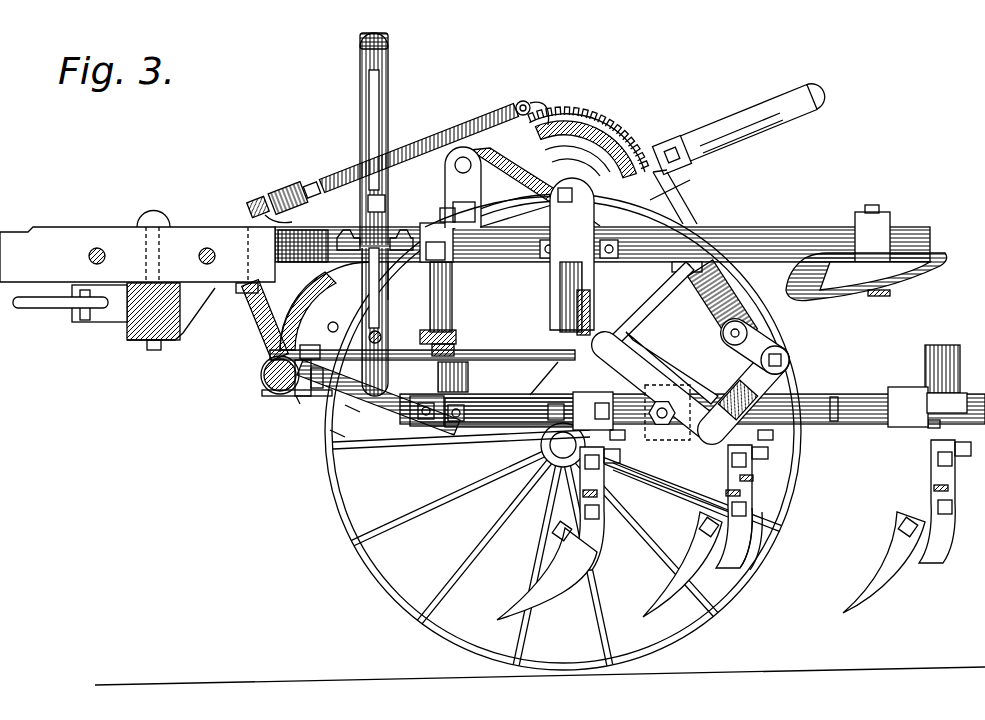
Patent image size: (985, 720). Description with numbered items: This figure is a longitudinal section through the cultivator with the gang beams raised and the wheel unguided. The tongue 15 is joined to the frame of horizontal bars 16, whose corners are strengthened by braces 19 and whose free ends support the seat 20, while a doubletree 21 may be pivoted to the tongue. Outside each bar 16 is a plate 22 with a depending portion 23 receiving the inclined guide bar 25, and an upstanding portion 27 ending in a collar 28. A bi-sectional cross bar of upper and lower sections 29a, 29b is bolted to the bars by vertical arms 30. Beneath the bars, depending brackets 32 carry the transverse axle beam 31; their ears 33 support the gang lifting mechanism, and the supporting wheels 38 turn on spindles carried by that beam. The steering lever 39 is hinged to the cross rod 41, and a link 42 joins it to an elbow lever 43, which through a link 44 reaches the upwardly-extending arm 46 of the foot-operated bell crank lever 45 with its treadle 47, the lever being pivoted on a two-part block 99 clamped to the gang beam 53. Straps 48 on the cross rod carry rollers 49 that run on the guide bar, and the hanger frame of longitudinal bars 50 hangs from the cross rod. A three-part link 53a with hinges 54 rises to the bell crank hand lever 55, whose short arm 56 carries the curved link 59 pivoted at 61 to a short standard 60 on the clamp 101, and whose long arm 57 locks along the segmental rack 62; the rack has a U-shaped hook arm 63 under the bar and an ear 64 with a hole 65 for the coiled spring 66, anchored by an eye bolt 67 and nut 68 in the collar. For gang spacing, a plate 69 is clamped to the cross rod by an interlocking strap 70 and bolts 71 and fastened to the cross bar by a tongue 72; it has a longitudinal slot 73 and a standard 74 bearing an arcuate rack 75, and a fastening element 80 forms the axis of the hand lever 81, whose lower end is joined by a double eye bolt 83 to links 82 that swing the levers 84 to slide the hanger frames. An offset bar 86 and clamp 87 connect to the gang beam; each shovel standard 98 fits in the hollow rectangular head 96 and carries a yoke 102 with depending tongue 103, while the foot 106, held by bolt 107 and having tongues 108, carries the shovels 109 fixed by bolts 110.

The tongue 15 is at (137, 243).
The horizontal bars 16 is at (805, 232).
The braces 19 is at (296, 236).
The seat 20 is at (915, 285).
The doubletree 21 is at (128, 330).
The plate 22 is at (310, 296).
The depending portions 23 is at (292, 316).
The guide bar 25 is at (262, 335).
The upstanding portion 27 is at (262, 218).
The collar 28 is at (310, 186).
The upper section 29a is at (458, 336).
The lower section 29b is at (525, 356).
The arms 30 is at (453, 300).
The transverse beam 31 is at (596, 320).
The depending brackets 32 is at (592, 300).
The ear 33 is at (520, 205).
The supporting wheels 38 is at (365, 572).
The lever 39 is at (495, 398).
The cross rod 41 is at (270, 392).
The link 42 is at (340, 330).
The elbow lever 43 is at (308, 346).
The link 44 is at (535, 378).
The foot-operated bell crank lever 45 is at (700, 445).
The upwardly-extending arm 46 is at (630, 358).
The treadle 47 is at (790, 360).
The straps 48 is at (262, 372).
The rollers 49 is at (250, 295).
The longitudinal bars 50 is at (405, 418).
The gang beam 53 is at (875, 424).
The three-part link 53a is at (440, 214).
The hinges 54 is at (450, 190).
The bell crank hand lever 55 is at (695, 183).
The short arm 56 is at (505, 170).
The long arm 57 is at (745, 112).
The curved link 59 is at (700, 212).
The short standard 60 is at (722, 343).
The pivot 61 is at (765, 330).
The segmental rack 62 is at (632, 118).
The U-shaped hook arm 63 is at (665, 288).
The ear 64 is at (518, 103).
The hole 65 is at (545, 106).
The coiled spring 66 is at (425, 140).
The eye bolt 67 is at (252, 203).
The nut 68 is at (285, 190).
The plate 69 is at (315, 390).
The interlocking strap 70 is at (298, 392).
The bolts 71 is at (296, 400).
The tongue 72 is at (432, 348).
The longitudinal slot 73 is at (440, 376).
The standard 74 is at (375, 252).
The arcuate rack 75 is at (368, 200).
The fastening element 80 is at (375, 322).
The hand lever 81 is at (390, 298).
The links 82 is at (350, 419).
The double eye bolt 83 is at (416, 410).
The levers 84 is at (330, 432).
The offset bar 86 is at (505, 440).
The clamp 87 is at (535, 470).
The hollow rectangular head 96 is at (620, 440).
The standard 98 is at (600, 393).
The two-part block 99 is at (690, 392).
The two-part clamp 101 is at (805, 396).
The yoke 102 is at (931, 472).
The depending tongue 103 is at (728, 486).
The foot 106 is at (760, 540).
The bolt 107 is at (726, 510).
The tongues 108 is at (755, 486).
The shovels 109 is at (580, 575).
The bolts 110 is at (600, 553).